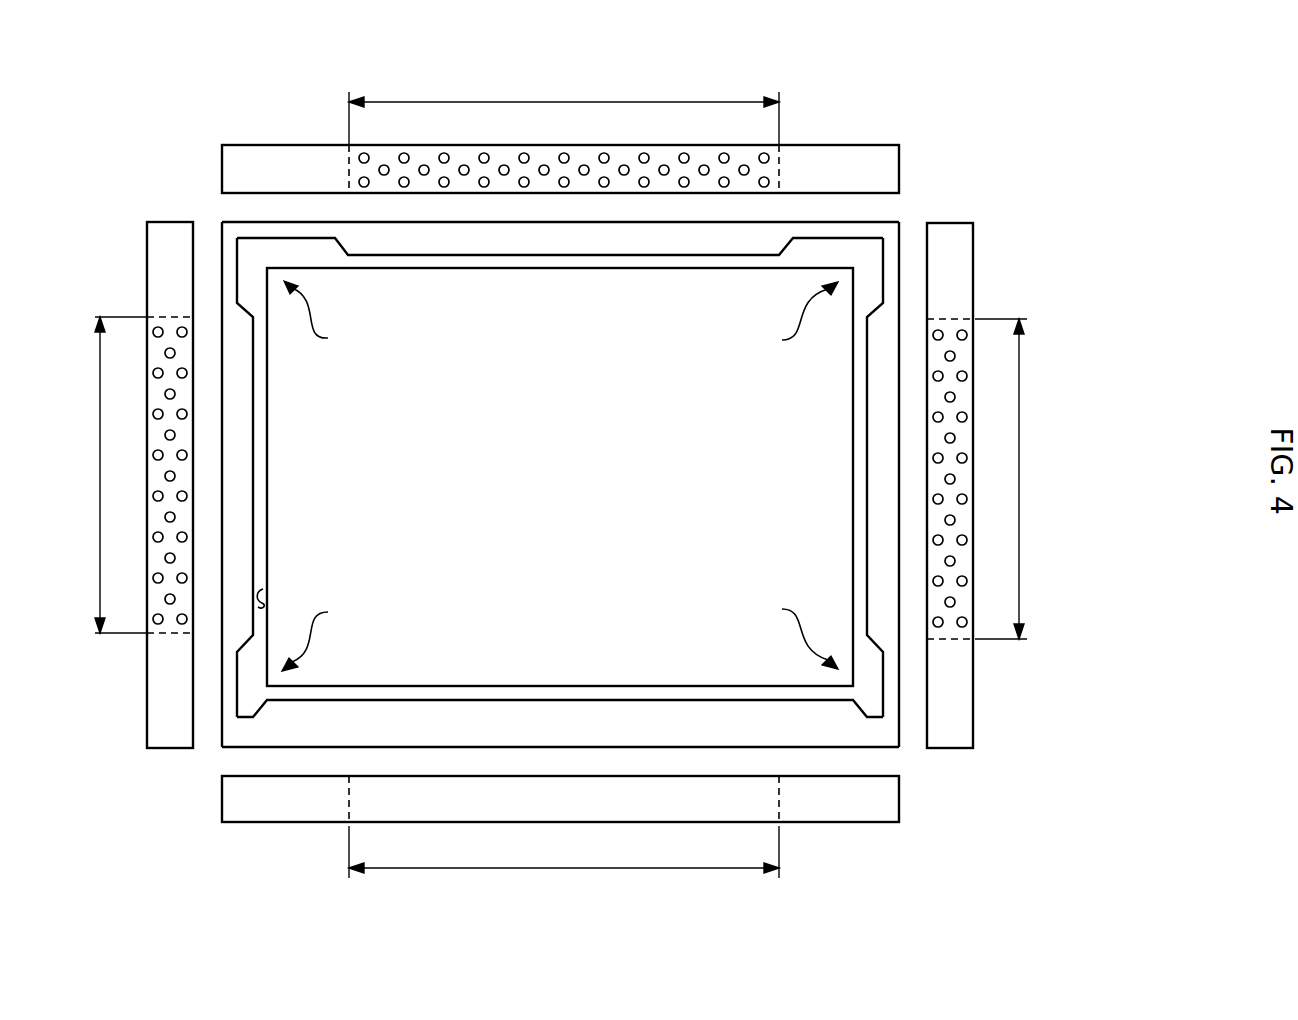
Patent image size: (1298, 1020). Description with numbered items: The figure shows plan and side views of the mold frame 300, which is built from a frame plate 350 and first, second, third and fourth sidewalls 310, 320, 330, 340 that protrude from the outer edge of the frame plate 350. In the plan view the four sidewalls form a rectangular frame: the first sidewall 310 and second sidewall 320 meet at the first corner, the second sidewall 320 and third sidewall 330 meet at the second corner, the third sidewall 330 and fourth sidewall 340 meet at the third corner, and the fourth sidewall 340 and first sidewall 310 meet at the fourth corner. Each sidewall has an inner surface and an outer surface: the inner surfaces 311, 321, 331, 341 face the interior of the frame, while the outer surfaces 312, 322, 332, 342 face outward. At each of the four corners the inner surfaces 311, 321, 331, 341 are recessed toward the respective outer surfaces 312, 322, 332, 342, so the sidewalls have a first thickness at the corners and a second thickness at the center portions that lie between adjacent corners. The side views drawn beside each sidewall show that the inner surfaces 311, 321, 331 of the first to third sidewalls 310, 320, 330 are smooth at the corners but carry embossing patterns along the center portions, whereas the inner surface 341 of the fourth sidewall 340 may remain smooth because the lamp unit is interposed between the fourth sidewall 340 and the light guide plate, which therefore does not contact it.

The mold frame 300 is at (527, 49).
The first sidewall 310 is at (348, 432).
The inner surface of the first sidewall 311 is at (168, 222).
The outer surface of the first sidewall 312 is at (215, 520).
The second sidewall 320 is at (513, 331).
The inner surface of the second sidewall 321 is at (270, 145).
The outer surface of the second sidewall 322 is at (532, 217).
The third sidewall 330 is at (770, 432).
The inner surface of the third sidewall 331 is at (950, 223).
The outer surface of the third sidewall 332 is at (905, 506).
The fourth sidewall 340 is at (627, 600).
The inner surface of the fourth sidewall 341 is at (268, 823).
The outer surface of the fourth sidewall 342 is at (630, 750).
The frame plate 350 is at (262, 598).